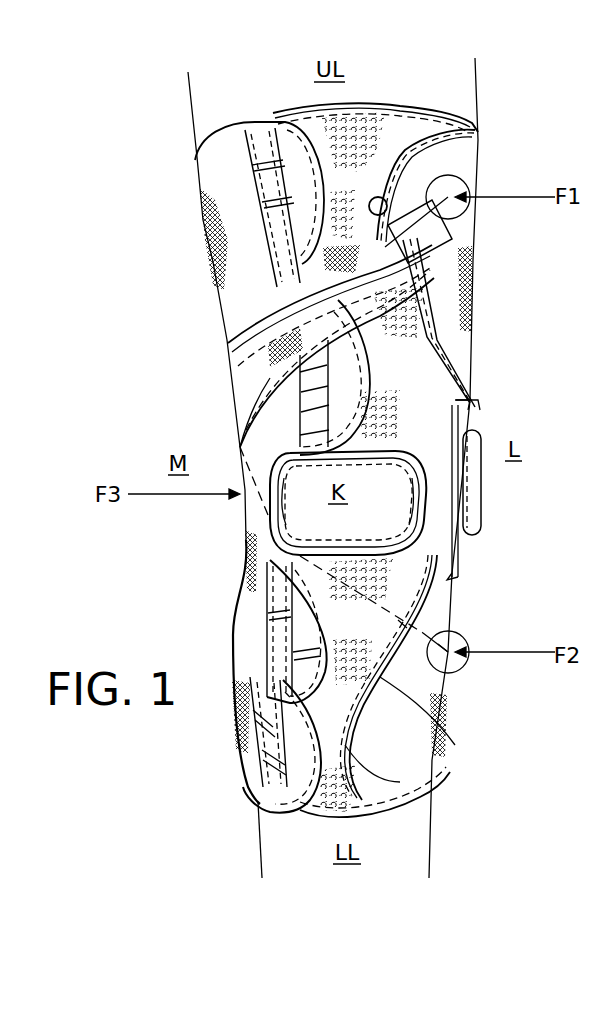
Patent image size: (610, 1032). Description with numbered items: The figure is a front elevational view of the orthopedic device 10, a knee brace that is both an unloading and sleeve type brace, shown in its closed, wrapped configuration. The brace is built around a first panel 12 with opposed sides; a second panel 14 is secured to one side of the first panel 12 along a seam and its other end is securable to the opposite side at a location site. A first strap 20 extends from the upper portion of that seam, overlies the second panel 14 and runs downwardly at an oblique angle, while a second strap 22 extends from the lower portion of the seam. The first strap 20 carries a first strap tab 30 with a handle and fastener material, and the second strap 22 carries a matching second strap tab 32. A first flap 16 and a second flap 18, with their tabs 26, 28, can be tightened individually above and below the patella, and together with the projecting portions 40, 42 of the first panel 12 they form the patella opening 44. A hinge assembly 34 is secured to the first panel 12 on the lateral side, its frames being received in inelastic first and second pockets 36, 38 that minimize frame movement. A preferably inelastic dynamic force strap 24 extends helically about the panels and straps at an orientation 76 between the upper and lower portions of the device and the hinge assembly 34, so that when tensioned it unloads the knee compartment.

The orthopedic device 10 is at (196, 310).
The first panel 12 is at (482, 150).
The second panel 14 is at (241, 563).
The first flap 16 is at (280, 407).
The second flap 18 is at (245, 620).
The first strap 20 is at (242, 245).
The second strap 22 is at (250, 753).
The dynamic force strap 24 is at (220, 366).
The tab of first flap 26 is at (380, 378).
The tab of second flap 28 is at (420, 733).
The first strap tab 30 is at (302, 186).
The second strap tab 32 is at (293, 793).
The hinge assembly 34 is at (490, 498).
The first pocket 36 is at (450, 300).
The second pocket 38 is at (440, 765).
The projecting portion 40 is at (472, 117).
The projecting portion 42 is at (422, 815).
The patella opening 44 is at (447, 578).
The orientation of dynamic force strap 76 is at (423, 333).